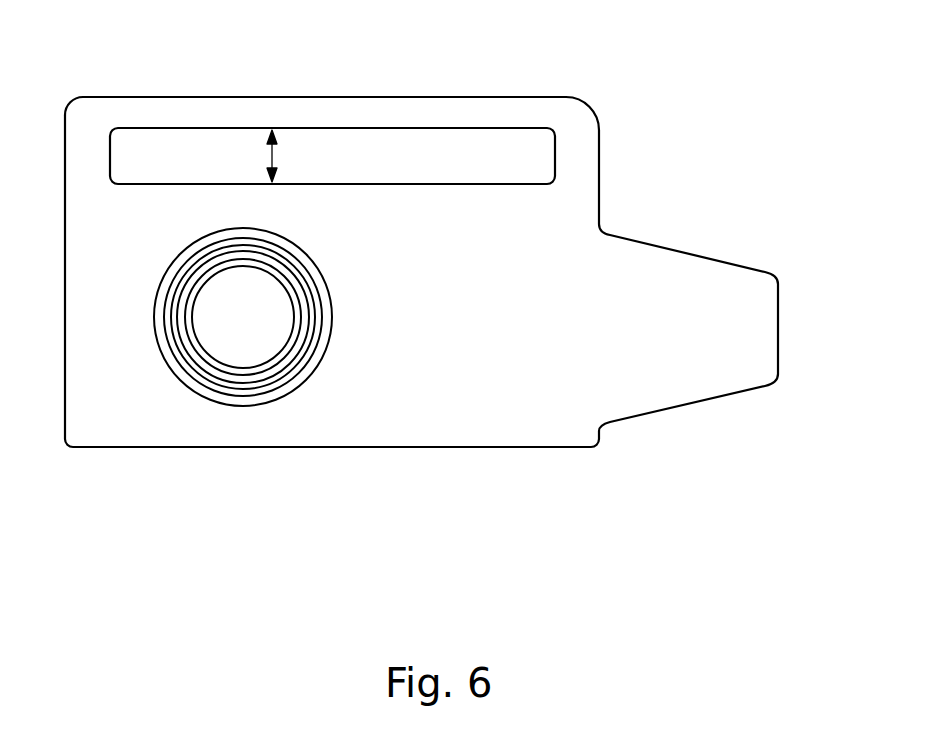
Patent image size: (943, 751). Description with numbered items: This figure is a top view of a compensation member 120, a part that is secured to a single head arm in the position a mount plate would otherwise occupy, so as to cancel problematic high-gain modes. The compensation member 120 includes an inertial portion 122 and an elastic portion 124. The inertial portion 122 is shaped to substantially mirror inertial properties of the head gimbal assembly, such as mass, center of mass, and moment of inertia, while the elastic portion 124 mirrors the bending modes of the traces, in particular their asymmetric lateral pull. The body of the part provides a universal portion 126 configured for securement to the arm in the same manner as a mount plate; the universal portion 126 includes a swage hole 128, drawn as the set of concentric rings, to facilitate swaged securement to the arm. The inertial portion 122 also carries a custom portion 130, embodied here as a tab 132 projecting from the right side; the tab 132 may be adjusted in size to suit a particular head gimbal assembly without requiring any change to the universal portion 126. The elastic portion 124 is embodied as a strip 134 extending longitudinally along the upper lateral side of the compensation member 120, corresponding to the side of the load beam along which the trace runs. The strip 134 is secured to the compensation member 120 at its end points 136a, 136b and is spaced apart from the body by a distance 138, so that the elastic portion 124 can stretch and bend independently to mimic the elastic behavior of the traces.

The compensation member 120 is at (692, 85).
The inertial portion 122 is at (108, 502).
The elastic portion 124 is at (363, 55).
The universal portion 126 is at (350, 430).
The swage hole 128 is at (205, 350).
The custom portion 130 is at (785, 205).
The tab 132 is at (765, 333).
The strip 134 is at (207, 102).
The end point 136a is at (108, 107).
The end point 136b is at (577, 108).
The distance 138 is at (275, 152).